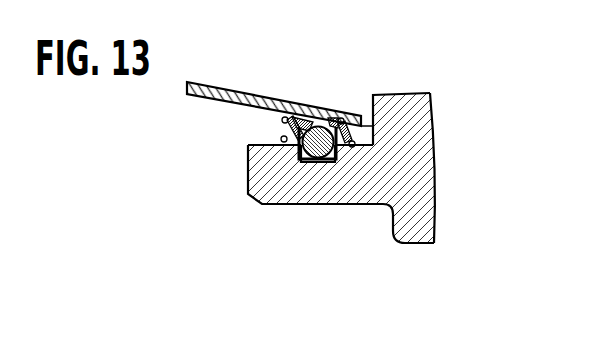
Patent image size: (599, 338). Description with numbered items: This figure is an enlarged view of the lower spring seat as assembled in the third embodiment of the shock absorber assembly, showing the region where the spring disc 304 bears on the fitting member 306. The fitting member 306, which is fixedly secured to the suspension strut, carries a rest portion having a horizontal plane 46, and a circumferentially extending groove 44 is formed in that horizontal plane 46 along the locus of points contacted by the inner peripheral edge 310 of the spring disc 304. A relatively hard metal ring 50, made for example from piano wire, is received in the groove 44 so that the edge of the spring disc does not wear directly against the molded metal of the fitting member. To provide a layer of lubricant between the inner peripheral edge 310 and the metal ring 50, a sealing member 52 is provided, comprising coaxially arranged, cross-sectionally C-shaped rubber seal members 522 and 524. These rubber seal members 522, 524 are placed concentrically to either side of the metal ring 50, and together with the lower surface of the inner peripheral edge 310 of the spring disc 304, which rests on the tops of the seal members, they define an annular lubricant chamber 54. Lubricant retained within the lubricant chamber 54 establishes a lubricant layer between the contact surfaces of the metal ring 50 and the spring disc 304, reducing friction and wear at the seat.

The spring disc 304 is at (212, 81).
The lubricant chamber 54 is at (296, 112).
The rubber seal member 524 is at (342, 140).
The inner peripheral edge 310 is at (386, 118).
The fitting member 306 is at (432, 117).
The sealing member 52 is at (362, 140).
The rubber seal member 522 is at (283, 136).
The horizontal plane 46 is at (252, 144).
The groove 44 is at (297, 150).
The metal ring 50 is at (320, 152).